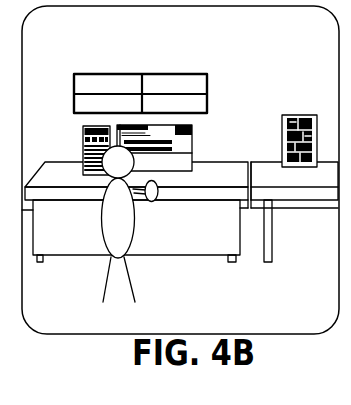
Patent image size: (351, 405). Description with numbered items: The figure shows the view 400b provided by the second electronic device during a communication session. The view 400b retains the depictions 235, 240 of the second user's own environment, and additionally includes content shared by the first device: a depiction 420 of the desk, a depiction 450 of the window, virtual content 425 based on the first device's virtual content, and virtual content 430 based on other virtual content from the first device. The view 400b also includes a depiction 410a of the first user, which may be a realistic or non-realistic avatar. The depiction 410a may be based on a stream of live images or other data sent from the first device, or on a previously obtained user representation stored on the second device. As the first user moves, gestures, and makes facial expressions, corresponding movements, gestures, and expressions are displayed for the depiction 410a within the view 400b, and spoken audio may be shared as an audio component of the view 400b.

The view 400b is at (83, 36).
The depiction of the window 450 is at (178, 74).
The virtual content 425 is at (83, 129).
The virtual content 430 is at (192, 147).
The depiction 235 is at (295, 115).
The depiction 240 is at (297, 182).
The depiction of the desk 420 is at (56, 256).
The depiction of the user 410a is at (132, 285).